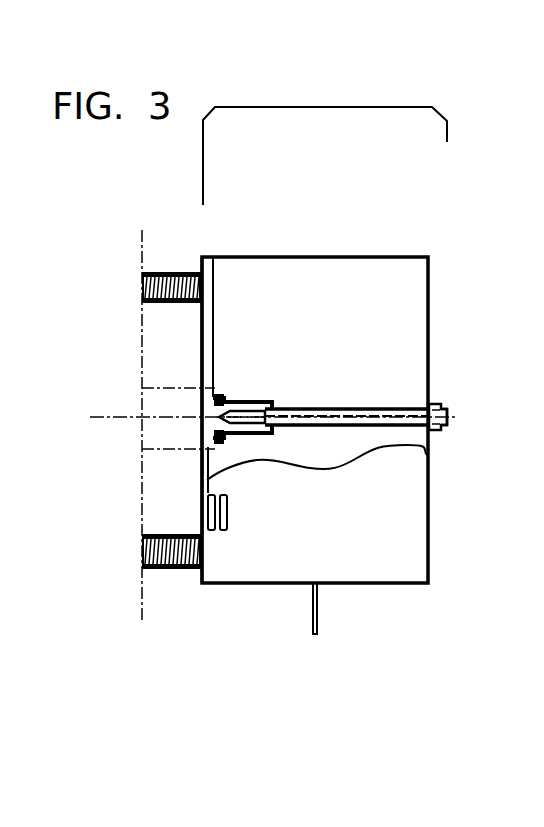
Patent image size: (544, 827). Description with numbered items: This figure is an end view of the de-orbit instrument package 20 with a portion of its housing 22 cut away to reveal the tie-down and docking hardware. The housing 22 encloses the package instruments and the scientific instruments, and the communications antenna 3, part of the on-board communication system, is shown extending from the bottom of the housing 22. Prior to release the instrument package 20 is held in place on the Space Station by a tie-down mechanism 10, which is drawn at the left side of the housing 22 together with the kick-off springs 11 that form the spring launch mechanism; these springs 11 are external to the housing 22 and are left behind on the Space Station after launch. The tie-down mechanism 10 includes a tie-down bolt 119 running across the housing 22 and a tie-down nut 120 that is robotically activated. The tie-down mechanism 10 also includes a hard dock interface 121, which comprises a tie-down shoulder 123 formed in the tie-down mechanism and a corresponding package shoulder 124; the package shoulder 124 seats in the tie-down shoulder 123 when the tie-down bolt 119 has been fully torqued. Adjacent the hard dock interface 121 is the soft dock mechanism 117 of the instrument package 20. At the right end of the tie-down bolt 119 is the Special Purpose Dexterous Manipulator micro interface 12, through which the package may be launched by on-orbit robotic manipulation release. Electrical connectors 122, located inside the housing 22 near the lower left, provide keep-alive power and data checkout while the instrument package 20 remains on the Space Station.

The communications antenna 3 is at (320, 618).
The tie-down mechanism 10 is at (213, 387).
The kick-off springs 11 is at (164, 276).
The Special Purpose Dexterous Manipulator micro interface 12 is at (440, 402).
The de-orbit instrument package 20 is at (360, 107).
The housing 22 is at (406, 256).
The soft dock mechanism 117 is at (255, 257).
The tie-down bolt 119 is at (385, 257).
The tie-down nut 120 is at (441, 430).
The hard dock interface 121 is at (212, 437).
The electrical connectors 122 is at (211, 530).
The tie-down shoulder 123 is at (213, 440).
The package shoulder 124 is at (257, 455).